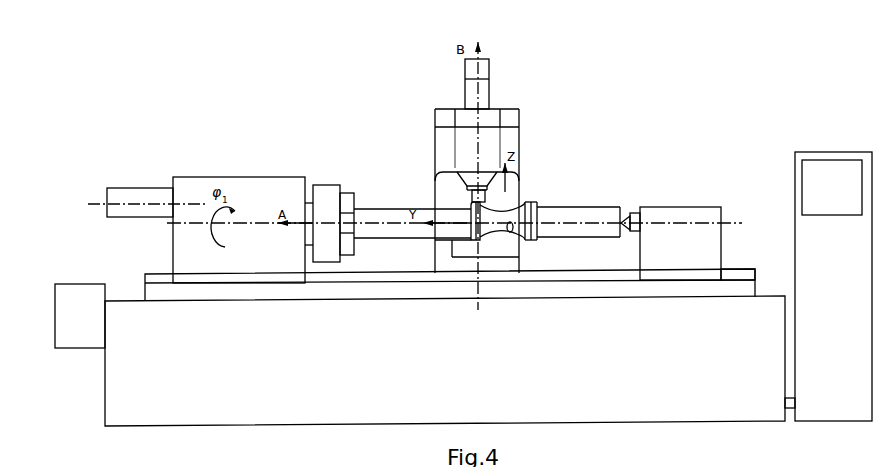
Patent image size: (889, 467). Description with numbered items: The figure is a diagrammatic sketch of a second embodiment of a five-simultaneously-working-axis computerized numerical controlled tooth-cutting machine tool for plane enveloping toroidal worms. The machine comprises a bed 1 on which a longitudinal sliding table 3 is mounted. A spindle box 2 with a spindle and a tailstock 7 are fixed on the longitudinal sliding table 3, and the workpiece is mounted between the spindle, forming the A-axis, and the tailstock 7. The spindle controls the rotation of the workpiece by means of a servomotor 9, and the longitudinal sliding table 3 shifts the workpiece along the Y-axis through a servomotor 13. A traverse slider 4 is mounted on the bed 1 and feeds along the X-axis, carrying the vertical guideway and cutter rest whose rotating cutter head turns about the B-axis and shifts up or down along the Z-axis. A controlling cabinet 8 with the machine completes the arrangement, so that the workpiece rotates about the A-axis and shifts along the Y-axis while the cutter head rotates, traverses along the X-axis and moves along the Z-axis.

The bed 1 is at (420, 257).
The spindle box 2 is at (243, 185).
The longitudinal sliding table 3 is at (450, 194).
The traverse slider 4 is at (837, 247).
The tailstock 7 is at (683, 184).
The display screen 8 is at (790, 144).
The servomotor 9 is at (146, 152).
The servomotor 13 is at (660, 464).